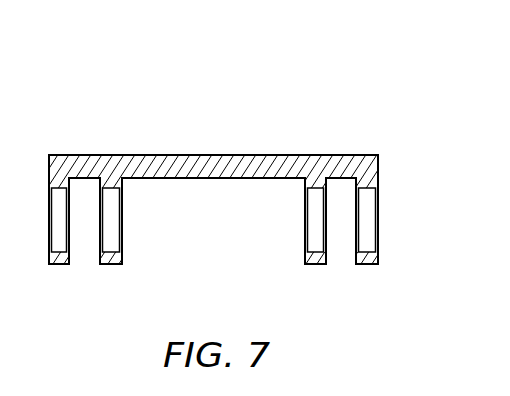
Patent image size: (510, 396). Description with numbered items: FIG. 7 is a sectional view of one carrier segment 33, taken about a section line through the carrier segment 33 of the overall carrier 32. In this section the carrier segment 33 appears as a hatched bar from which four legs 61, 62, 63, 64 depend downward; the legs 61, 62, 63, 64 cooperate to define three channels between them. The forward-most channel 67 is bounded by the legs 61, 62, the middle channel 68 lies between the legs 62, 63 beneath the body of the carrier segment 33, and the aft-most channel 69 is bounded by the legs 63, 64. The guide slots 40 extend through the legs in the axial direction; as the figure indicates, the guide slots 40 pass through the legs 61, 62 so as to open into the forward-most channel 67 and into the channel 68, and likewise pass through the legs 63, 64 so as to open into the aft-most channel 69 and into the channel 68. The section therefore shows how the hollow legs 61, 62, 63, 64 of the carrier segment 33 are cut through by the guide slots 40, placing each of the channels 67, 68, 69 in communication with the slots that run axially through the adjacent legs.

The carrier body 32 is at (209, 78).
The carrier segment 33 is at (190, 153).
The guide slots 40 is at (46, 194).
The leg 61 is at (72, 189).
The leg 62 is at (124, 189).
The leg 63 is at (303, 187).
The leg 64 is at (354, 187).
The forward-most channel 67 is at (87, 243).
The channel 68 is at (223, 181).
The aft-most channel 69 is at (346, 240).